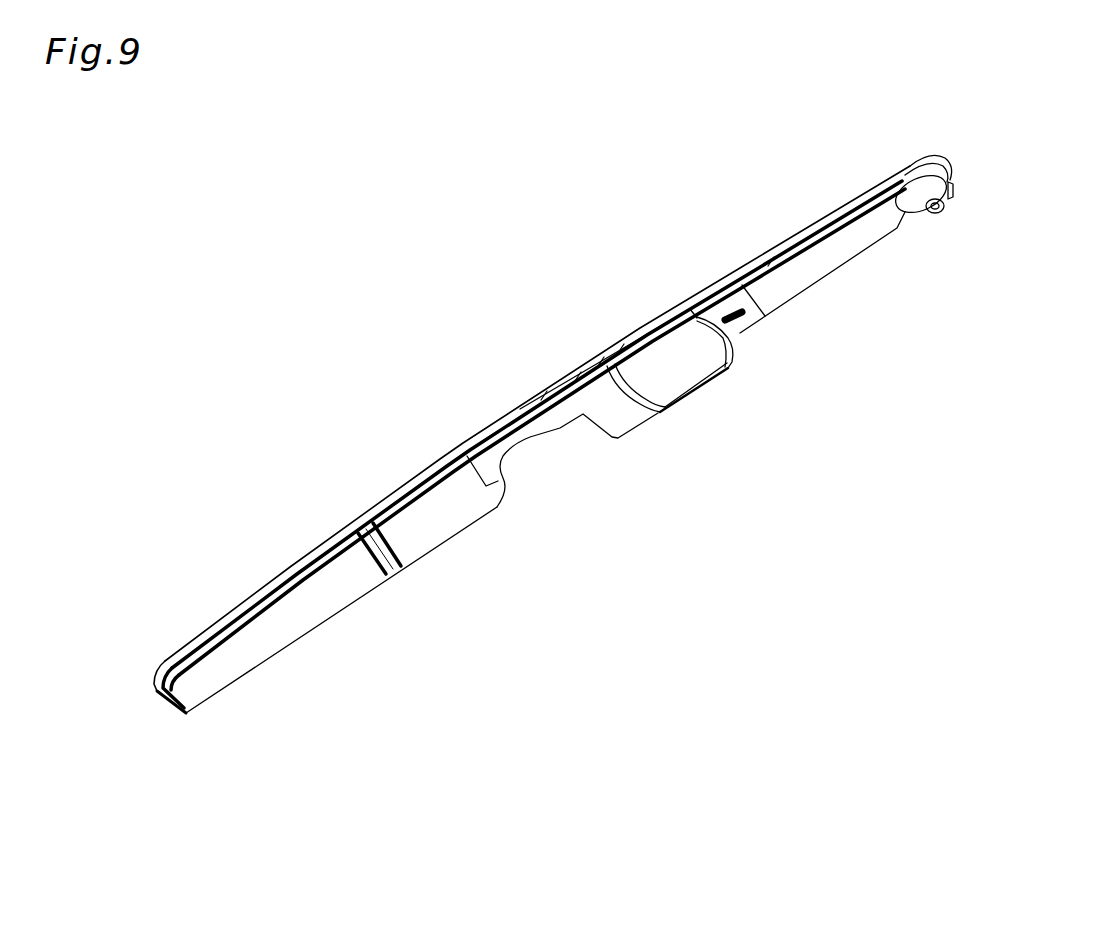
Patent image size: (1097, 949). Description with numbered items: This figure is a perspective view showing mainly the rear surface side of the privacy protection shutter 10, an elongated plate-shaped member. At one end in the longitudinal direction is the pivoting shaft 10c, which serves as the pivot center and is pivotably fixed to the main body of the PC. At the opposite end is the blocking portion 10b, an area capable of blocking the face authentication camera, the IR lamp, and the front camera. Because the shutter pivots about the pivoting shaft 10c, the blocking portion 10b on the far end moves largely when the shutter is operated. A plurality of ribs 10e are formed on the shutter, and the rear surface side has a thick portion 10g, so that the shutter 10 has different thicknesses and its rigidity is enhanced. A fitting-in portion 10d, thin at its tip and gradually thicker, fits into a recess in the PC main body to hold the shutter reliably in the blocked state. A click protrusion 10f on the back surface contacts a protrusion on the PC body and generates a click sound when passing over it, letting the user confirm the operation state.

The privacy protection shutter 10 is at (661, 214).
The blocking portion 10b is at (316, 610).
The pivoting shaft 10c is at (934, 215).
The fitting-in portion 10d is at (716, 388).
The ribs 10e is at (170, 715).
The click protrusion 10f is at (744, 320).
The thick portion 10g is at (672, 384).